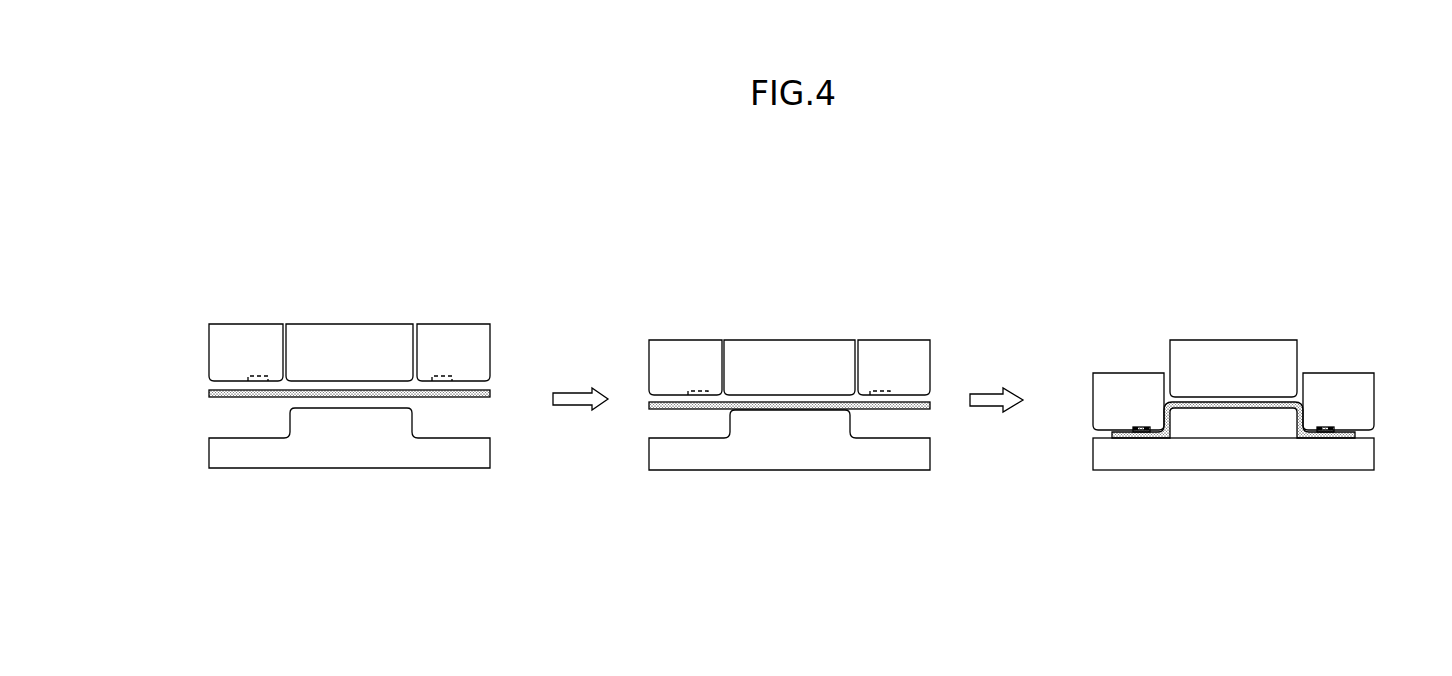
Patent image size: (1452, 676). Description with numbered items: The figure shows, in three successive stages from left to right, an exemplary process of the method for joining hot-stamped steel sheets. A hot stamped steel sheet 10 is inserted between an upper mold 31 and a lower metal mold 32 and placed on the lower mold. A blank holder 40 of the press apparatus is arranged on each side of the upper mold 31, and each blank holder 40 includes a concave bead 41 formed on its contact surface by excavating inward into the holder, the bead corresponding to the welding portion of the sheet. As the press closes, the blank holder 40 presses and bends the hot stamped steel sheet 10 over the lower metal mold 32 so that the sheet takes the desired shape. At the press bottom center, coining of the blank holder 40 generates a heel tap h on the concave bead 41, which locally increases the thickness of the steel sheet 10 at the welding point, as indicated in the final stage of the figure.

The hot stamped steel sheet 10 is at (233, 397).
The upper mold 31 is at (363, 338).
The lower metal mold 32 is at (370, 450).
The blank holder 40 is at (225, 342).
The concave bead 41 is at (248, 378).
The heel tap h is at (1148, 430).